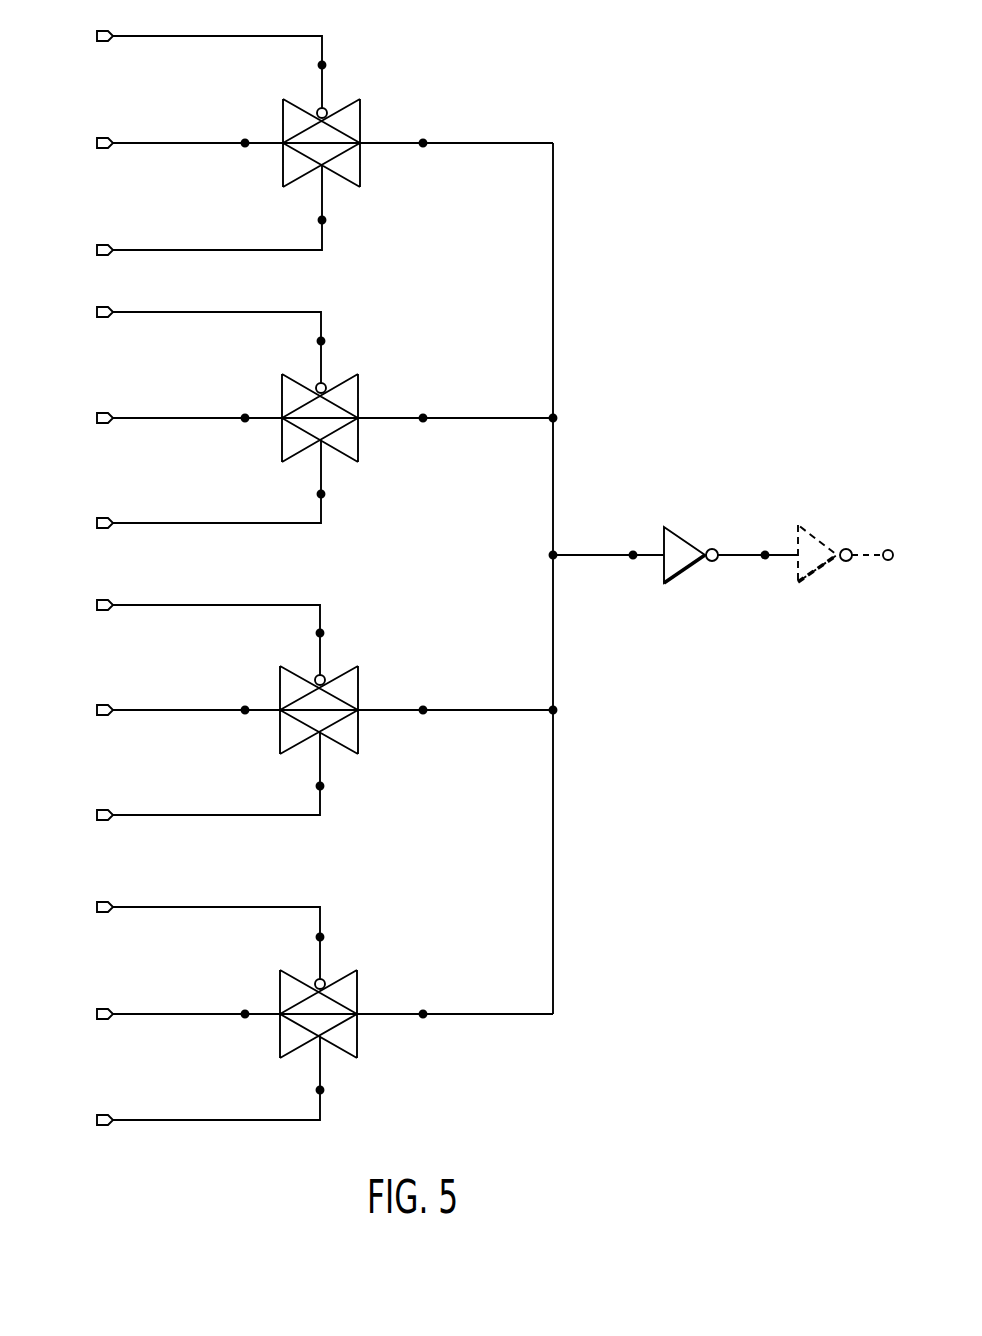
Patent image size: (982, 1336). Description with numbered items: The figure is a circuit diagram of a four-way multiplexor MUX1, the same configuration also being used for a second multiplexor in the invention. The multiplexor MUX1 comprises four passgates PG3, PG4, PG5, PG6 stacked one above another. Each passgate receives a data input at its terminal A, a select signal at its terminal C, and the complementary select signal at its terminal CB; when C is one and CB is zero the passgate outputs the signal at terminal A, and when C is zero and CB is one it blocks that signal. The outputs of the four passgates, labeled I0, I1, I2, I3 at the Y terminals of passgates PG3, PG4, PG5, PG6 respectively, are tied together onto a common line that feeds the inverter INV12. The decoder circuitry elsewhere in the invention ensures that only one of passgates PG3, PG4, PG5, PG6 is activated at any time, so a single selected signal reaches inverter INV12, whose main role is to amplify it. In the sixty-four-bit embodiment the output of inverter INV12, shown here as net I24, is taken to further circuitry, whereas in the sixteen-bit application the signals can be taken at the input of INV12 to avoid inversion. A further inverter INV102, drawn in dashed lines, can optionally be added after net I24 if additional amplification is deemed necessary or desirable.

The passgate PG3 is at (231, 142).
The passgate PG4 is at (231, 417).
The passgate PG5 is at (230, 709).
The passgate PG6 is at (230, 1013).
The pass gate output net I0 is at (456, 117).
The pass gate output net I1 is at (455, 392).
The pass gate output net I2 is at (455, 684).
The pass gate output net I3 is at (455, 988).
The 4-way multiplexor MUX1 is at (669, 221).
The inverter INV12 is at (690, 540).
The inverter output net I24 is at (758, 542).
The inverter INV102 is at (825, 542).